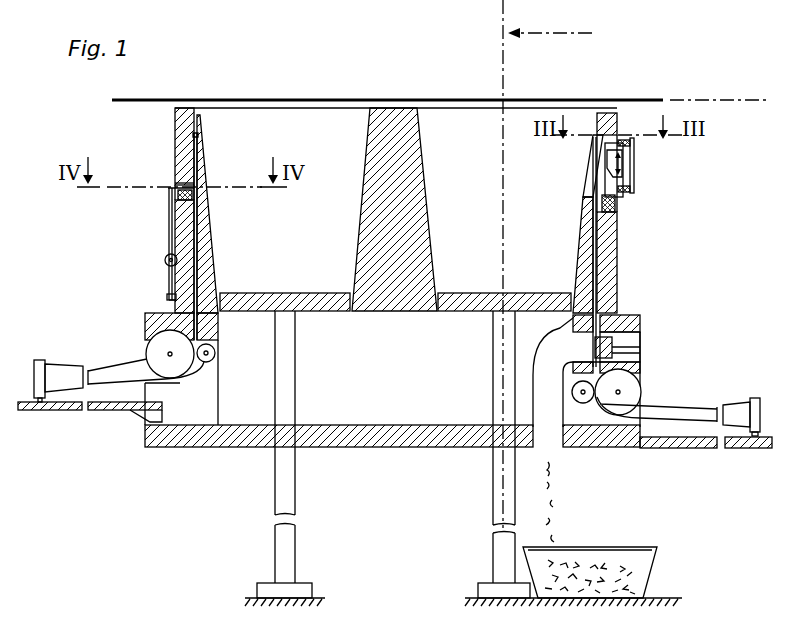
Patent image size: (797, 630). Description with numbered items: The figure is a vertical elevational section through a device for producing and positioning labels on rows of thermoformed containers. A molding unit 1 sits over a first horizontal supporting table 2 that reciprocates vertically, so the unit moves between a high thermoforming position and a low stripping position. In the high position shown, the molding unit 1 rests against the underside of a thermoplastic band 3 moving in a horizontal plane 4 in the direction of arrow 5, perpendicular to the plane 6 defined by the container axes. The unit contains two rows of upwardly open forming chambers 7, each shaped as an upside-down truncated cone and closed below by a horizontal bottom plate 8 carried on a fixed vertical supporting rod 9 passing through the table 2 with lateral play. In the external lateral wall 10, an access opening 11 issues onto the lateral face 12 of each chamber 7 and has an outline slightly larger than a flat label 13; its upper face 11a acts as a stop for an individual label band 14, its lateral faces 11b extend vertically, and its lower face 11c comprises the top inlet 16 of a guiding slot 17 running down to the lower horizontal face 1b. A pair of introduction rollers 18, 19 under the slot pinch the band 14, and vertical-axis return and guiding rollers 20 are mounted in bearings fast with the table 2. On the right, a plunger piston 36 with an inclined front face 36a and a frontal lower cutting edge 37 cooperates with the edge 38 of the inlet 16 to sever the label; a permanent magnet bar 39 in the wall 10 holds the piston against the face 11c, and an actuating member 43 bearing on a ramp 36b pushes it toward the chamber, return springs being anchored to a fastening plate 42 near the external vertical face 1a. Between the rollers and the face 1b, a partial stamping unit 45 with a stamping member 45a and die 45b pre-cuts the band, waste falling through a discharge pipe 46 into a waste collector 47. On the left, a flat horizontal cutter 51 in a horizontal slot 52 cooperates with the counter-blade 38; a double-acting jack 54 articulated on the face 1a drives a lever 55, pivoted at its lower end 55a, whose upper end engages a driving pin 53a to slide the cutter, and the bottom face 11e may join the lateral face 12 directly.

The molding unit 1 is at (400, 324).
The longitudinal vertical face of molding unit 1a is at (175, 115).
The lower horizontal face of molding unit 1b is at (641, 324).
The first horizontal supporting table 2 is at (148, 432).
The thermoplastic band 3 is at (135, 100).
The horizontal plane 4 is at (700, 100).
The arrow 5 is at (559, 31).
The plane defined by container axes 6 is at (500, 74).
The forming chamber 7 is at (384, 217).
The horizontal bottom plate 8 is at (294, 298).
The fixed vertical supporting rod 9 is at (289, 385).
The external lateral wall 10 is at (178, 232).
The access opening 11 is at (204, 167).
The upper face of access opening 11a is at (600, 112).
The lateral faces of access opening 11b is at (590, 189).
The lower face of access opening 11c is at (200, 190).
The bottom face of access opening 11e is at (186, 150).
The lateral face of forming chamber 12 is at (216, 262).
The flat label 13 is at (199, 137).
The individual label band 14 is at (201, 245).
The top inlet of guiding slot 16 is at (616, 214).
The guiding slot 17 is at (213, 286).
The introduction roller 18 is at (154, 354).
The introduction roller 19 is at (216, 355).
The return and guiding roller 20 is at (39, 369).
The plunger piston 36 is at (608, 143).
The front face of plunger piston 36a is at (597, 143).
The ramp 36b is at (598, 174).
The frontal lower cutting edge 37 is at (622, 182).
The edge of aperture 38 is at (205, 203).
The permanent magnet bar 39 is at (178, 213).
The fastening plate 42 is at (634, 143).
The actuating member 43 is at (627, 162).
The partial stamping unit 45 is at (646, 347).
The stamping member 45a is at (612, 357).
The die 45b is at (573, 322).
The discharge pipe 46 is at (545, 400).
The waste collector 47 is at (650, 567).
The flat horizontal cutter 51 is at (172, 190).
The horizontal slot 52 is at (178, 183).
The articulation and driving pin 53a is at (167, 192).
The double-acting jack 54 is at (166, 264).
The lever 55 is at (169, 250).
The articulation of lever 55a is at (167, 297).